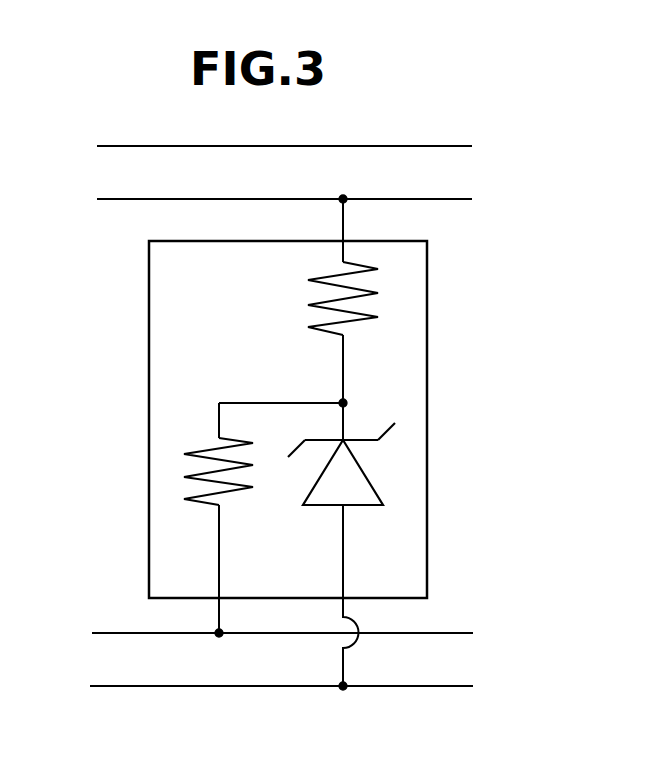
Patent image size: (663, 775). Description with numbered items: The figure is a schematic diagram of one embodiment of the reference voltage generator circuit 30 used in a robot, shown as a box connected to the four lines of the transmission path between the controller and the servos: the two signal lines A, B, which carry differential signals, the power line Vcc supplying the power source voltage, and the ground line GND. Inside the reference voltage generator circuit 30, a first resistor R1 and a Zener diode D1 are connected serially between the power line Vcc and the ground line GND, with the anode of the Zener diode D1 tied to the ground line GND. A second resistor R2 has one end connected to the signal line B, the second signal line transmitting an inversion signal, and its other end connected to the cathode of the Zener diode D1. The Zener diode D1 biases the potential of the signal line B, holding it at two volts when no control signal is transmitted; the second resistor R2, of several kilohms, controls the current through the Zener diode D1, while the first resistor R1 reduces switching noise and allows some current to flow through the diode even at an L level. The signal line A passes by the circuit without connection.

The reference voltage generator circuit 30 is at (390, 241).
The first resistor R1 is at (175, 461).
The second resistor R2 is at (390, 303).
The Zener diode D1 is at (372, 486).
The signal line A is at (275, 146).
The signal line B is at (275, 199).
The power line Vcc is at (261, 633).
The ground line GND is at (255, 686).